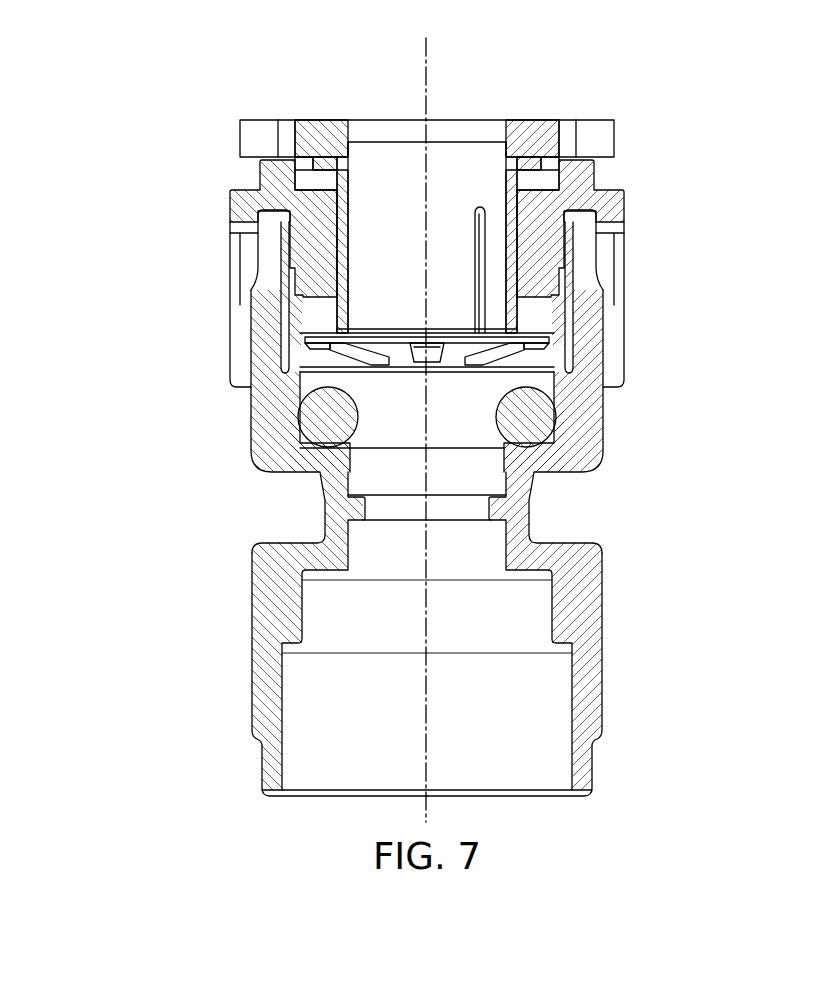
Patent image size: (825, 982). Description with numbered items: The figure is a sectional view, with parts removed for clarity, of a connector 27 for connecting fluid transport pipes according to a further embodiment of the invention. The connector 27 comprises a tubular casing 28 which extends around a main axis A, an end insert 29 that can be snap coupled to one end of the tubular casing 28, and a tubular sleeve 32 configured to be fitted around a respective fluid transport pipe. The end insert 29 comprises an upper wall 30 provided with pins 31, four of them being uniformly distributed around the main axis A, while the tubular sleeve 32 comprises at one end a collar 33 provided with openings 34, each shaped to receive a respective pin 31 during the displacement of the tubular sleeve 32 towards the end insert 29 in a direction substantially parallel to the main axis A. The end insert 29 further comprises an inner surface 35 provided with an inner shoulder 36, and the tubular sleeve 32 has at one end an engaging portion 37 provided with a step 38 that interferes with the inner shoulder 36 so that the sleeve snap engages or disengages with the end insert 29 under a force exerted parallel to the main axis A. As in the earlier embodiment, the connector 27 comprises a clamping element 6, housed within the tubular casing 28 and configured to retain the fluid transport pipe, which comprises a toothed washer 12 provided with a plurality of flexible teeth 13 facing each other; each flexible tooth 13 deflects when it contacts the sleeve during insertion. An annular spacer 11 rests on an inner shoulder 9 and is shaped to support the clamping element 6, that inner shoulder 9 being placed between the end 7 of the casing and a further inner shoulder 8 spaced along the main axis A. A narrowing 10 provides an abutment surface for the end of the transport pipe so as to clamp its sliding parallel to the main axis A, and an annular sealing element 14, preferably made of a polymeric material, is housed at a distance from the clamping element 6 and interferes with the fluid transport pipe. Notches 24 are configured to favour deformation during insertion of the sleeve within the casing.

The main axis A is at (423, 78).
The clamping element 6 is at (448, 378).
The end 7 is at (598, 238).
The inner shoulder 8 is at (300, 480).
The inner shoulder 9 is at (527, 360).
The narrowing 10 is at (555, 516).
The annular spacer 11 is at (537, 342).
The toothed washer 12 is at (318, 370).
The flexible teeth 13 is at (368, 360).
The annular sealing element 14 is at (338, 440).
The notches 24 is at (478, 238).
The connector 27 is at (745, 128).
The tubular casing 28 is at (226, 648).
The end insert 29 is at (212, 232).
The upper wall 30 is at (316, 189).
The pin 31 is at (268, 178).
The tubular sleeve 32 is at (517, 112).
The collar 33 is at (538, 128).
The opening 34 is at (268, 142).
The inner surface 35 is at (333, 262).
The inner shoulder 36 is at (336, 302).
The engaging portion 37 is at (449, 378).
The step 38 is at (562, 305).